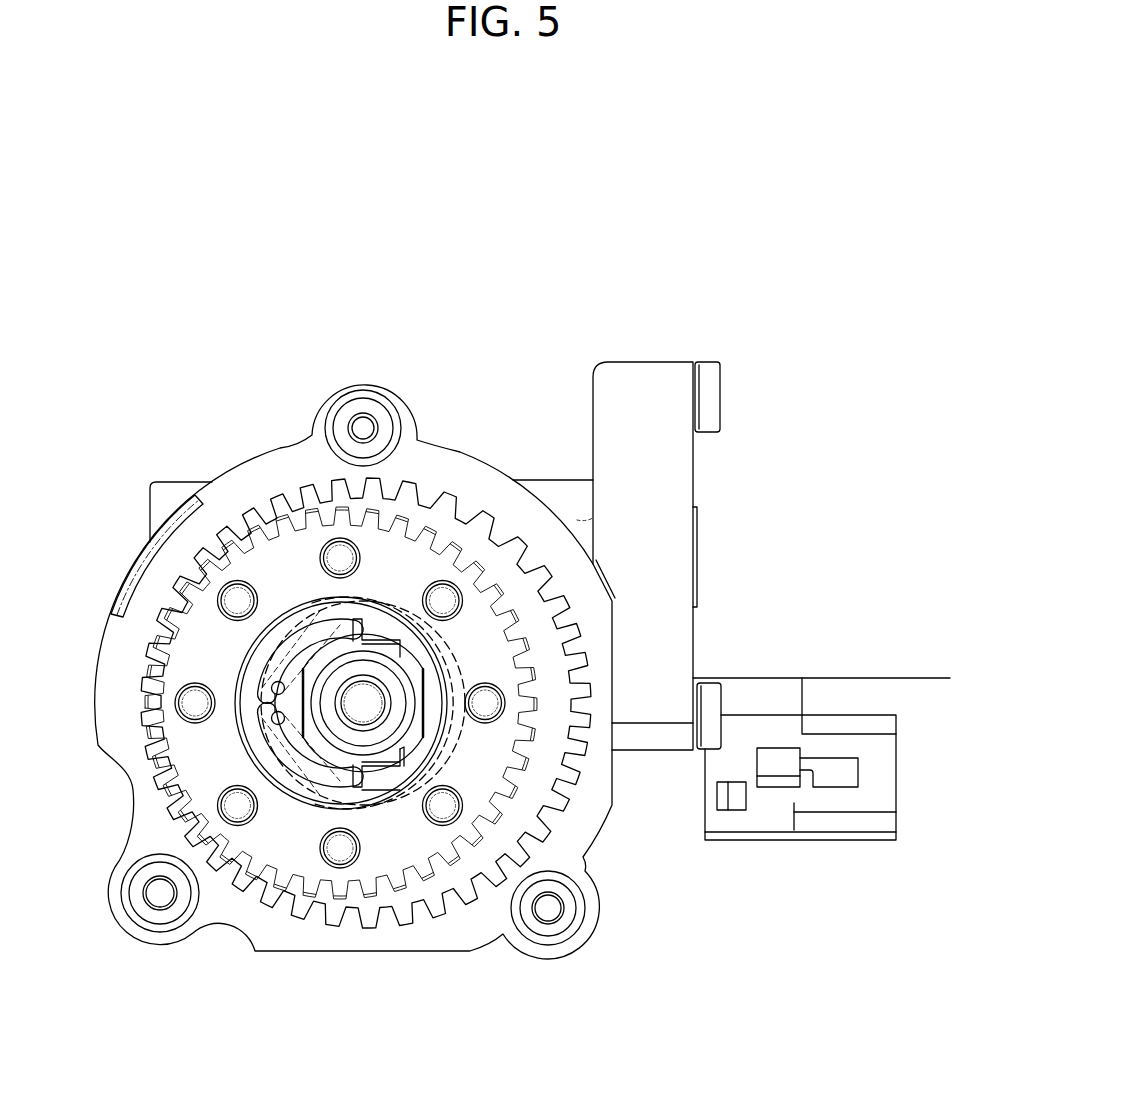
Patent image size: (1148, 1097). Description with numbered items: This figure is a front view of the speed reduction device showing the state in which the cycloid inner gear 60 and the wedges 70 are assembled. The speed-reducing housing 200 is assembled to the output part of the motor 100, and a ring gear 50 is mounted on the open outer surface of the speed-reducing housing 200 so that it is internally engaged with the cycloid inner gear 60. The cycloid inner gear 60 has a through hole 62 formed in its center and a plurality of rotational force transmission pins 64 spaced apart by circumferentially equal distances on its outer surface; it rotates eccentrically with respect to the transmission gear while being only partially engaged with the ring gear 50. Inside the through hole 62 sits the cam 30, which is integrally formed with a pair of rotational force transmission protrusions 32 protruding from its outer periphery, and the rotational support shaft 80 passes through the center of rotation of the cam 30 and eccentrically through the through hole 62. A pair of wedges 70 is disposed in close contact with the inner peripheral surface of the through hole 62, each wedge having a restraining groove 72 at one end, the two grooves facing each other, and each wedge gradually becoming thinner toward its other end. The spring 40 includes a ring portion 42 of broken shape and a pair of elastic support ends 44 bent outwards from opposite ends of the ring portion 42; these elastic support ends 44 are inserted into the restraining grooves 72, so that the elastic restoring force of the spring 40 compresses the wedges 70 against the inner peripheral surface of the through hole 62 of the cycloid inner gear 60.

The cam 30 is at (430, 765).
The rotational force transmission protrusions 32 is at (372, 628).
The spring 40 is at (409, 595).
The ring portion 42 is at (434, 733).
The elastic support ends 44 is at (272, 689).
The ring gear 50 is at (243, 523).
The cycloid inner gear 60 is at (284, 513).
The through hole 62 is at (397, 785).
The rotational force transmission pins 64 is at (340, 557).
The wedges 70 is at (274, 628).
The restraining grooves 72 is at (257, 682).
The rotational support shaft 80 is at (367, 712).
The motor 100 is at (807, 418).
The speed-reducing housing 200 is at (553, 468).